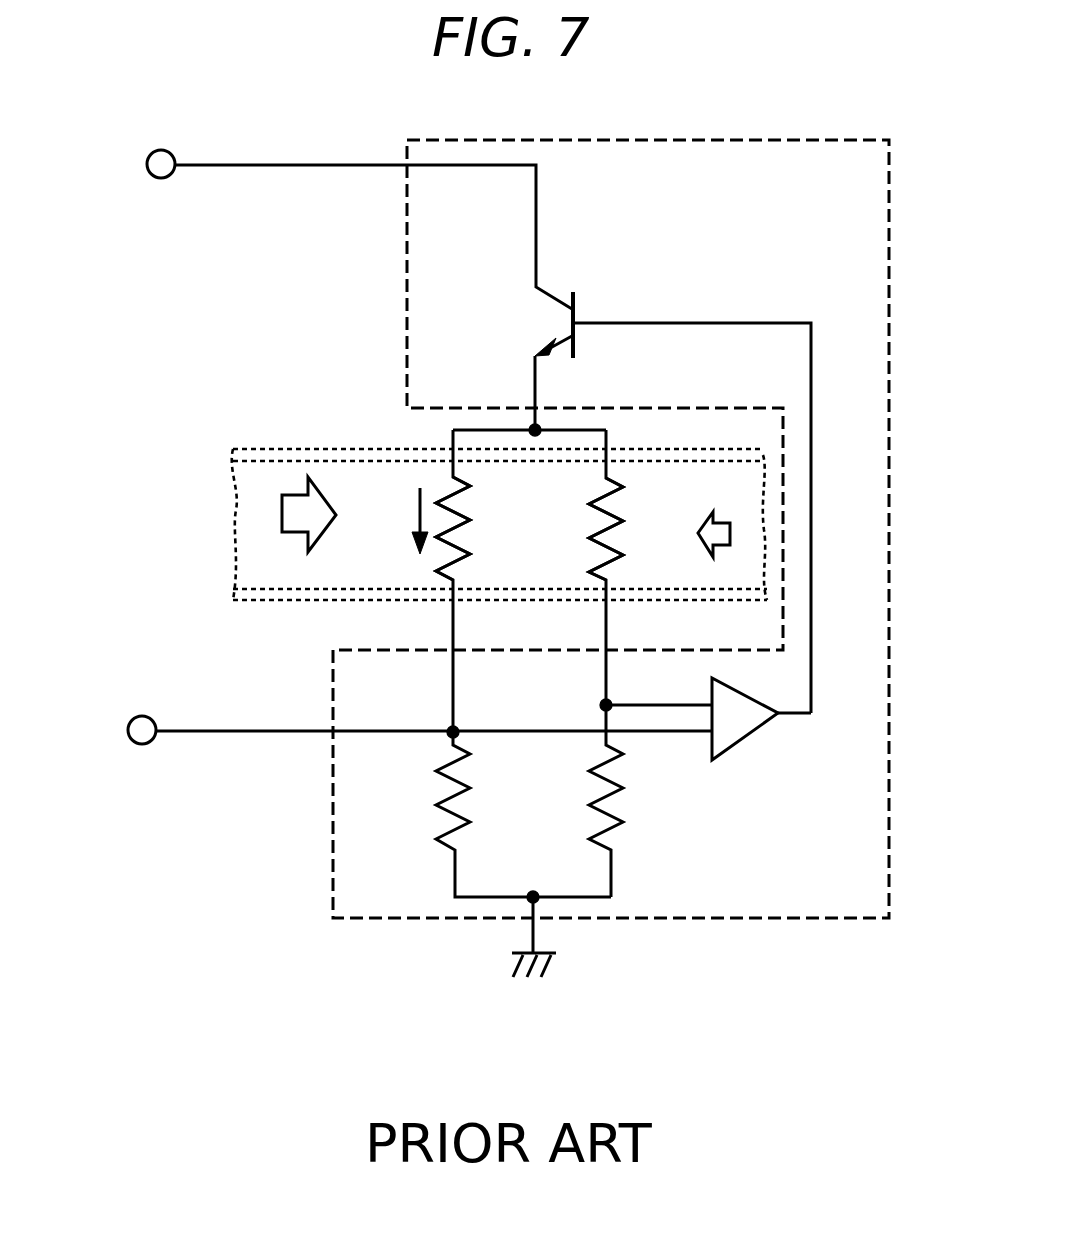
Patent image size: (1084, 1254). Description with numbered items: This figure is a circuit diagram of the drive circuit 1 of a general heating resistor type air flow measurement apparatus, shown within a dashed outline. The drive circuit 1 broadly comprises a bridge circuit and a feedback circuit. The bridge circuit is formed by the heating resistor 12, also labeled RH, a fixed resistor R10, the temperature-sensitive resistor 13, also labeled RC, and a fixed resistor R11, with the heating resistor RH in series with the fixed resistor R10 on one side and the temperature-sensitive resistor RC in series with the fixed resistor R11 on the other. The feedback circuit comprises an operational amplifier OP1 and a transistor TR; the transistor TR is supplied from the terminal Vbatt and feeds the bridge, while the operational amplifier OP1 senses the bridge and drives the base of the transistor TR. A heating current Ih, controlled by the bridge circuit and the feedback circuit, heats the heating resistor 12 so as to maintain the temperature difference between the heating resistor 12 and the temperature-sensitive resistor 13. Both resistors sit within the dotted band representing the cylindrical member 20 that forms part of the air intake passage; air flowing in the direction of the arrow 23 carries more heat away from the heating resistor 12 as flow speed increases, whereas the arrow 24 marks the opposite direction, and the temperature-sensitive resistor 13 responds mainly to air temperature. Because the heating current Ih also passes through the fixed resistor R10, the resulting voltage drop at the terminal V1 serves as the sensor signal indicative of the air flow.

The drive circuit 1 is at (889, 752).
The cylindrical member 20 is at (293, 598).
The arrow 23 is at (282, 497).
The reverse flow direction 24 is at (720, 523).
The heating resistor 12 is at (470, 520).
The temperature-sensitive resistor 13 is at (622, 521).
The transistor TR is at (576, 308).
The heating resistor RH is at (473, 581).
The temperature-sensitive resistor RC is at (627, 581).
The fixed resistor R10 is at (523, 815).
The fixed resistor R11 is at (638, 815).
The operational amplifier OP1 is at (748, 737).
The heating current Ih is at (406, 521).
The battery voltage terminal Vbatt is at (118, 164).
The output voltage terminal V1 is at (120, 730).